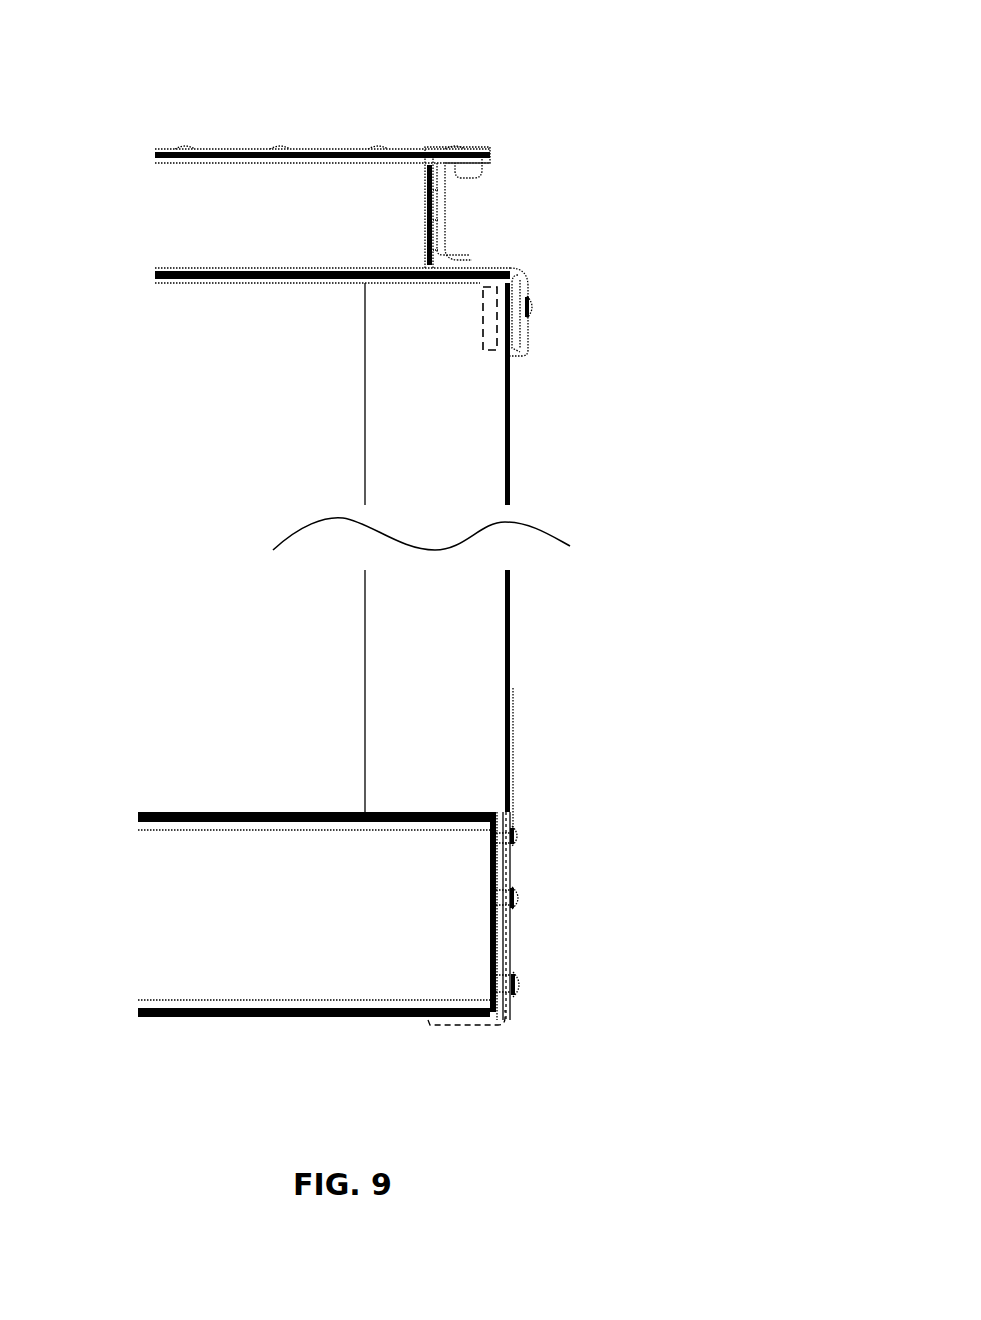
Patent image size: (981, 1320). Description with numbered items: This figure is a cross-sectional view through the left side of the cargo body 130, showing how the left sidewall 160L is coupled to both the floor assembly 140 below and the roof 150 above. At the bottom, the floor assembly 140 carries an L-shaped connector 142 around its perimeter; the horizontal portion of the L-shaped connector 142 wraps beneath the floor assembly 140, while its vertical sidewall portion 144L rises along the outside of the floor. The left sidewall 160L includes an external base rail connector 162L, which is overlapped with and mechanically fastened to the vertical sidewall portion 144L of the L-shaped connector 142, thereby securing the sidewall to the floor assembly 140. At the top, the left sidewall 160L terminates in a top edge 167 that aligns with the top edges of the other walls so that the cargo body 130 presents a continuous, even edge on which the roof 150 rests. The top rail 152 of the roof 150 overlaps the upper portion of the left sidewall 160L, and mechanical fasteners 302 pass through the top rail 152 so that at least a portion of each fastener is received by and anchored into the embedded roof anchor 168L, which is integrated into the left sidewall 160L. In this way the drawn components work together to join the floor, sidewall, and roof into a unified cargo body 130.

The cargo body 130 is at (592, 140).
The roof 150 is at (150, 128).
The top edge 167 is at (461, 277).
The top rail 152 is at (508, 270).
The mechanical fasteners 302 is at (533, 300).
The embedded roof anchor 168L is at (530, 355).
The left sidewall 160L is at (493, 480).
The floor assembly 140 is at (445, 1052).
The base rail connector 162L is at (510, 862).
The vertical sidewall portion 144L is at (512, 952).
The L-shaped connector 142 is at (505, 1022).